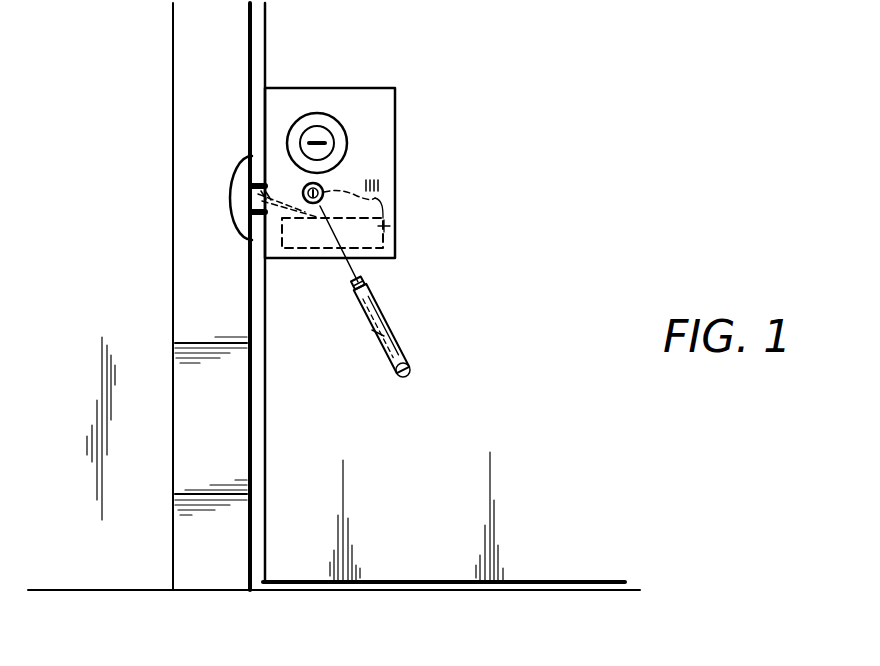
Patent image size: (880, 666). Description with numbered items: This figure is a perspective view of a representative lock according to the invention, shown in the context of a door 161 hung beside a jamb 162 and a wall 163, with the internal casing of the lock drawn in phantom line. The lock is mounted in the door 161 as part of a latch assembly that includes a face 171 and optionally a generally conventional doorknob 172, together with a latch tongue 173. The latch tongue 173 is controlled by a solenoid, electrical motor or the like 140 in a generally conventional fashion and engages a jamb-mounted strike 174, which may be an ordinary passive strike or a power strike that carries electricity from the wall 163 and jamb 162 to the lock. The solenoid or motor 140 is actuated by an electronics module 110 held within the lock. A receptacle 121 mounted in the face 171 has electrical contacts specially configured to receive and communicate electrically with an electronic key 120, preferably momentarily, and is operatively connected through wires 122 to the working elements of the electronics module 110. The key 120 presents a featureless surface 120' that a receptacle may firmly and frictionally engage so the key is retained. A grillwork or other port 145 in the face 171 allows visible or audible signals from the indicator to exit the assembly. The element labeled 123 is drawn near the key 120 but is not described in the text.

The electronics module 110 is at (386, 226).
The electronic key 120 is at (430, 327).
The featureless surface 120' is at (332, 360).
The receptacle 121 is at (325, 187).
The wires 122 is at (375, 217).
The probe 123 is at (350, 272).
The solenoid, electrical motor or the like 140 is at (278, 196).
The grillwork or other port 145 is at (380, 185).
The door 161 is at (263, 535).
The jamb 162 is at (190, 577).
The wall 163 is at (85, 550).
The face 171 is at (395, 97).
The doorknob 172 is at (326, 116).
The latch tongue 173 is at (250, 150).
The strike 174 is at (230, 206).